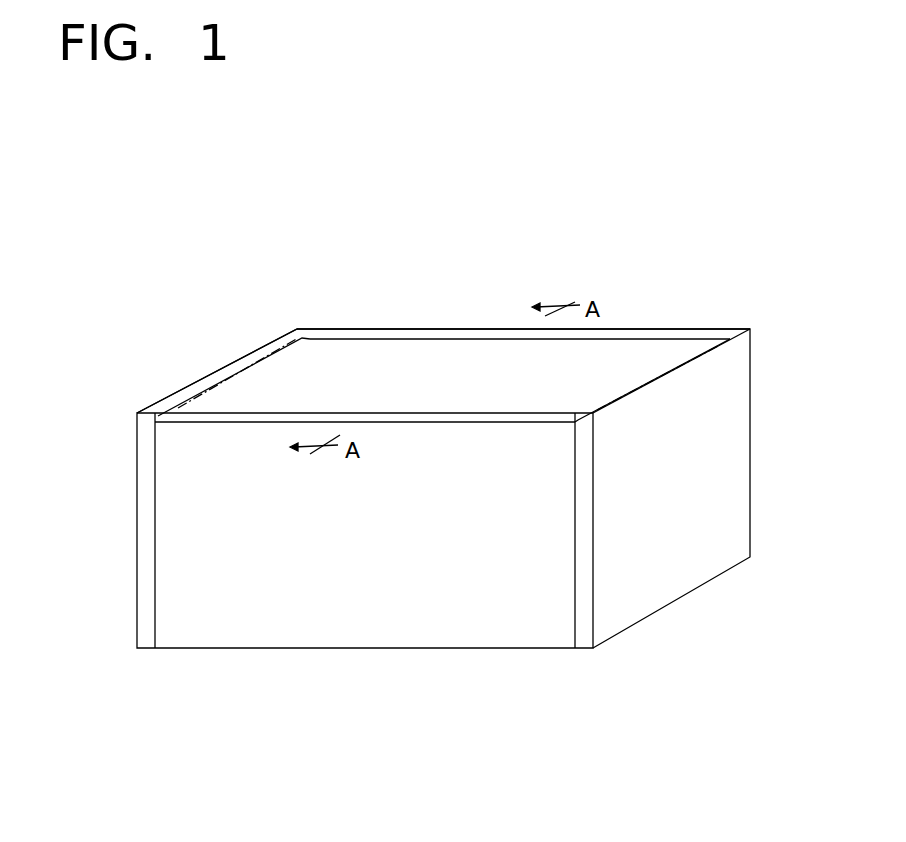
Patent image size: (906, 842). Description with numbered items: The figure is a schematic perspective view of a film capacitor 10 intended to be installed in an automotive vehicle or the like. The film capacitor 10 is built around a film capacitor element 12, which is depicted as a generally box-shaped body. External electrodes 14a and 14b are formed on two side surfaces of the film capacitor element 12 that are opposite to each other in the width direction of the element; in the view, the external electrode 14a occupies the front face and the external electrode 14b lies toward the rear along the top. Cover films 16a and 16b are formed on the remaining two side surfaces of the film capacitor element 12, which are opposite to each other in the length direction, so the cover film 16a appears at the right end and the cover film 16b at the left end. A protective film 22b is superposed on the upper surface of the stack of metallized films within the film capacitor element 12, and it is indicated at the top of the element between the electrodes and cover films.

The film capacitor 10 is at (458, 281).
The film capacitor element 12 is at (392, 376).
The external electrode 14a is at (347, 605).
The external electrode 14b is at (628, 332).
The cover film 16a is at (722, 433).
The cover film 16b is at (207, 383).
The protective film 22b is at (300, 370).